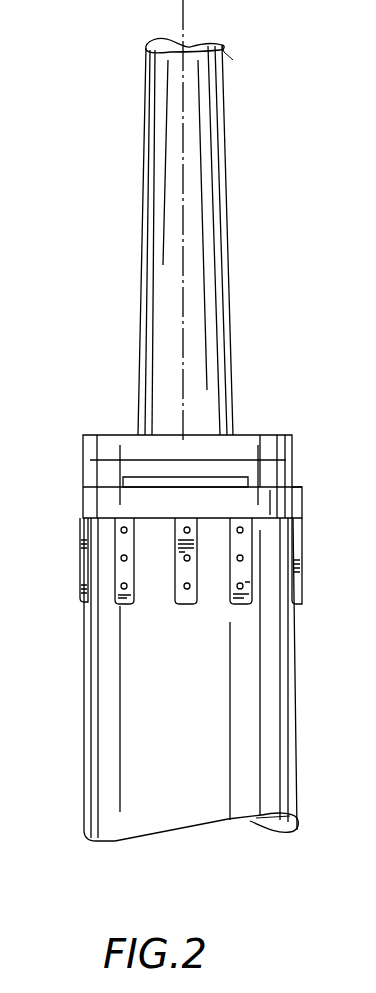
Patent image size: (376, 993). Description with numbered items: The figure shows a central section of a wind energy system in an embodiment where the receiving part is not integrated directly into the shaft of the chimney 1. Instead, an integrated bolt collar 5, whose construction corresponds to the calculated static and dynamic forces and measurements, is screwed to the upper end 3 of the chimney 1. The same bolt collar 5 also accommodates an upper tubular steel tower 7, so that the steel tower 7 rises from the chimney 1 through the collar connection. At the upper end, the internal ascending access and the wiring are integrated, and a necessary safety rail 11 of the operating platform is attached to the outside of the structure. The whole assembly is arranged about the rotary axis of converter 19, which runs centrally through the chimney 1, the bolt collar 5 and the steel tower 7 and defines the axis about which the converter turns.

The chimney 1 is at (140, 662).
The tower terminal 3 is at (150, 535).
The bolt collar 5 is at (108, 500).
The steel tower 7 is at (165, 298).
The railing 11 is at (245, 436).
The rotary axis of converter 19 is at (186, 18).